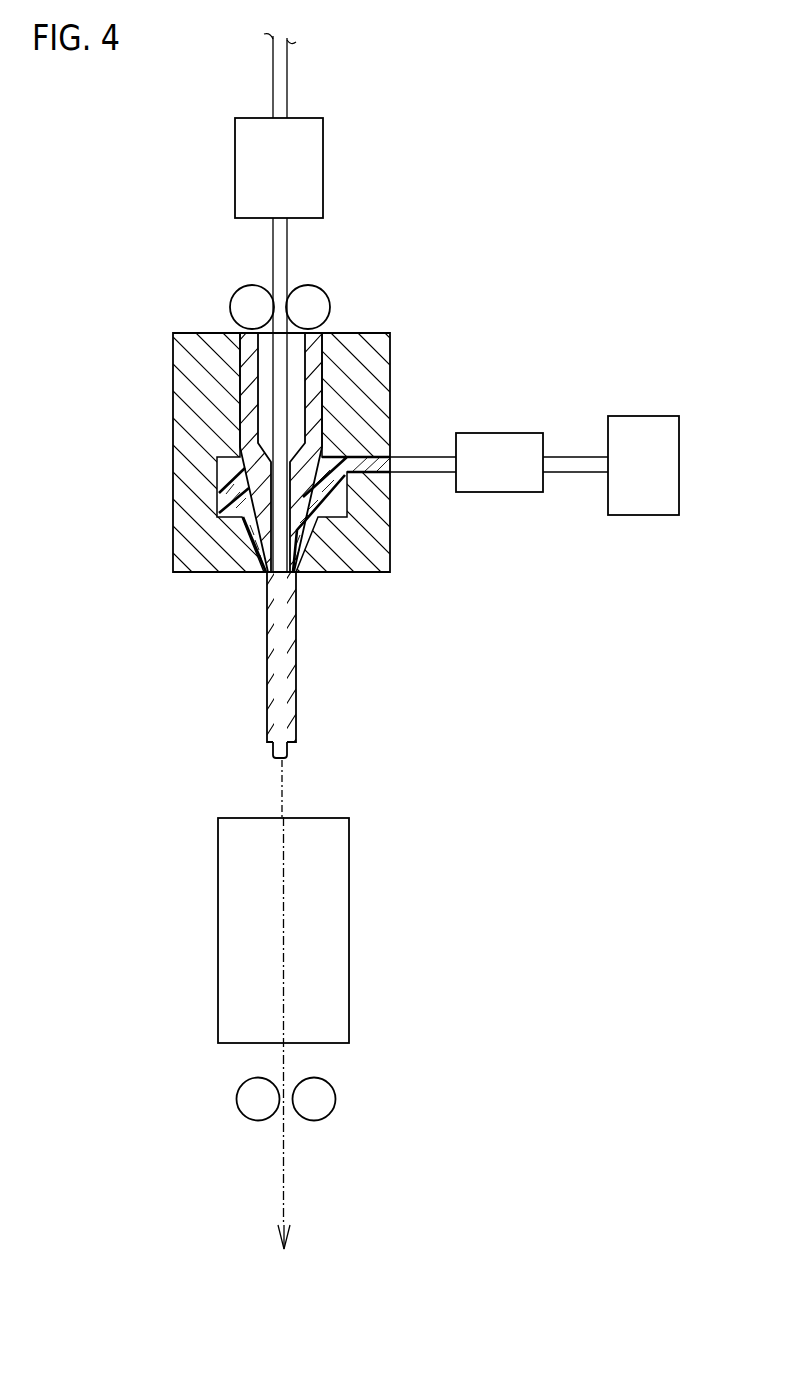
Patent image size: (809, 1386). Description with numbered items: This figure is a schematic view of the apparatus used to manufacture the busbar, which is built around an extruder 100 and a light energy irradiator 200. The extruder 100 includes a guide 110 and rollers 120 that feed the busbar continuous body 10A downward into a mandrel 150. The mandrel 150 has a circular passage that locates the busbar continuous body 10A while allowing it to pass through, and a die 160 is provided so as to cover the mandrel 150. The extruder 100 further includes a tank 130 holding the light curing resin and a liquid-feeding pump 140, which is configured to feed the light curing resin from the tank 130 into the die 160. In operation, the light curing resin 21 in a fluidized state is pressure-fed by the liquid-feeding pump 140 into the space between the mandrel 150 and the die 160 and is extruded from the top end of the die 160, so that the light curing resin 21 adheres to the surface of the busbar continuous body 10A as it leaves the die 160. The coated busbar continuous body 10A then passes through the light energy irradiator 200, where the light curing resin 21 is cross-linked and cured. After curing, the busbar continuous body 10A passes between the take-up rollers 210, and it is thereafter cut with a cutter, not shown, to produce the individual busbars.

The busbar continuous body 10A is at (288, 79).
The guide 110 is at (310, 175).
The rollers 120 is at (320, 302).
The extruder 100 is at (492, 322).
The die 160 is at (365, 400).
The mandrel 150 is at (313, 352).
The liquid-feeding pump 140 is at (497, 478).
The tank 130 is at (648, 498).
The light curing resin 21 is at (298, 693).
The light energy irradiator 200 is at (337, 913).
The take-up rollers 210 is at (322, 1098).